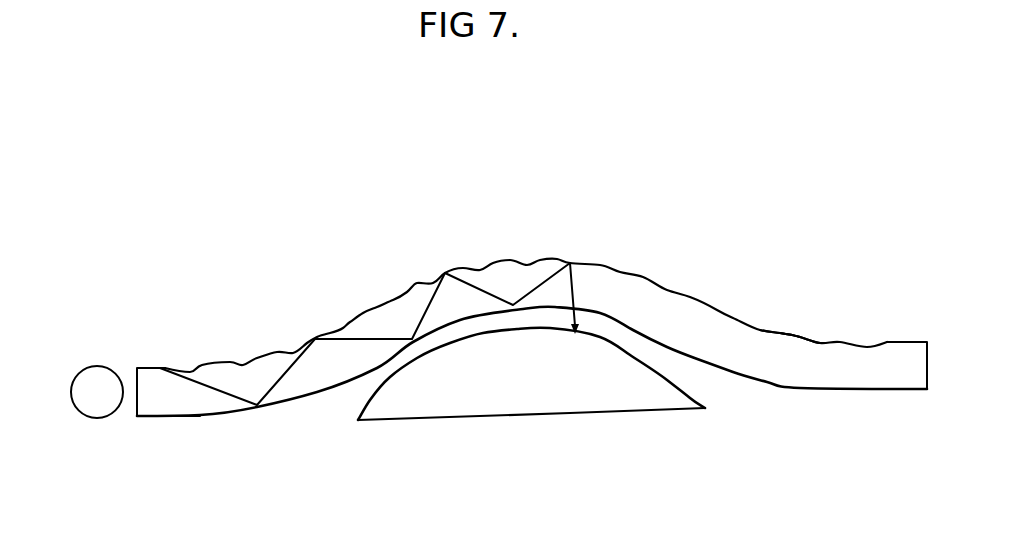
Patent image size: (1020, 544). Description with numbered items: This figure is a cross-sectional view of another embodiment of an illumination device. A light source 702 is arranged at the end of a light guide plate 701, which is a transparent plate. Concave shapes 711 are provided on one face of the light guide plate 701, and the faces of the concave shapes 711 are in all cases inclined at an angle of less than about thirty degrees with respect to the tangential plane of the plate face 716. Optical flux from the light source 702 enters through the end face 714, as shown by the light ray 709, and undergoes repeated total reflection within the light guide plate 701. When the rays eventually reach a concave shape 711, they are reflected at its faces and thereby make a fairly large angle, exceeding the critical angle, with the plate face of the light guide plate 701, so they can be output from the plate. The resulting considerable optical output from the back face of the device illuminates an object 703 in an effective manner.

The light guide plate 701 is at (697, 323).
The light source 702 is at (97, 405).
The object 703 is at (570, 393).
The light ray 709 is at (362, 338).
The concave shapes 711 is at (773, 333).
The end face 714 is at (133, 386).
The plate face 716 is at (800, 337).